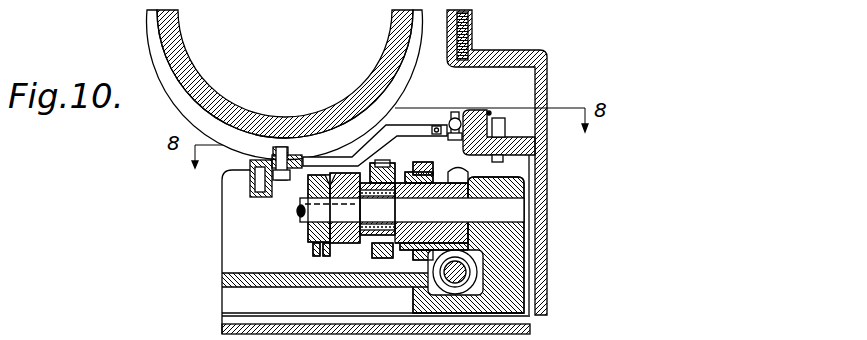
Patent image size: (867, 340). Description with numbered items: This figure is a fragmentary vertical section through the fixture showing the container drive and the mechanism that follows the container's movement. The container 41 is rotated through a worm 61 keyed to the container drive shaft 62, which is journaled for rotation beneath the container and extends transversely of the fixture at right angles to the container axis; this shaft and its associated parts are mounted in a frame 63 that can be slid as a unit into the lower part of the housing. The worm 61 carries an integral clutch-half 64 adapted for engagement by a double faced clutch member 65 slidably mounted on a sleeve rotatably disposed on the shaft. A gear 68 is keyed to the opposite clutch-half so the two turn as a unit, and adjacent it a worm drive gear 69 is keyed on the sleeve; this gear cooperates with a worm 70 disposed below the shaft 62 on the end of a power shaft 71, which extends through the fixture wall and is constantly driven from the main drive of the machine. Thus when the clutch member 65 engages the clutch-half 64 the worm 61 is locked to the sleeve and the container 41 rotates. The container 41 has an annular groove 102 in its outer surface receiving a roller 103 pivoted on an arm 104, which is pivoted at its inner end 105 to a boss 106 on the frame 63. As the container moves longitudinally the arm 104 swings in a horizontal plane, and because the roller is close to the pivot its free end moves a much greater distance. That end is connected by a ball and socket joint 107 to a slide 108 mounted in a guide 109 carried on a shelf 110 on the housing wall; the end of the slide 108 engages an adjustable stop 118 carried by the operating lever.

The container 41 is at (174, 82).
The worm 61 is at (312, 240).
The container drive shaft 62 is at (298, 212).
The frame 63 is at (496, 245).
The clutch-half 64 is at (358, 247).
The double faced clutch member 65 is at (378, 243).
The gear 68 is at (421, 163).
The worm drive gear 69 is at (455, 168).
The worm 70 is at (470, 258).
The power shaft 71 is at (467, 268).
The annular groove 102 is at (184, 106).
The roller 103 is at (296, 146).
The arm 104 is at (408, 125).
The inner end of arm 105 is at (250, 170).
The boss 106 is at (248, 195).
The ball and socket joint 107 is at (448, 122).
The slide 108 is at (486, 114).
The guide 109 is at (497, 157).
The shelf 110 is at (546, 146).
The adjustable stop 118 is at (489, 30).